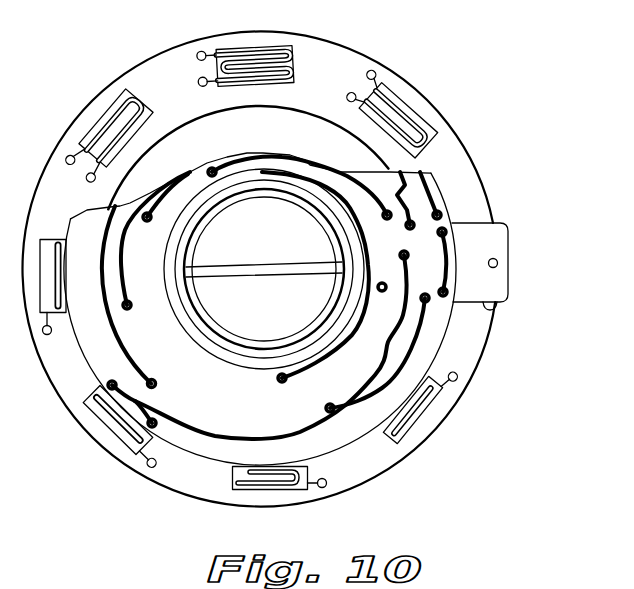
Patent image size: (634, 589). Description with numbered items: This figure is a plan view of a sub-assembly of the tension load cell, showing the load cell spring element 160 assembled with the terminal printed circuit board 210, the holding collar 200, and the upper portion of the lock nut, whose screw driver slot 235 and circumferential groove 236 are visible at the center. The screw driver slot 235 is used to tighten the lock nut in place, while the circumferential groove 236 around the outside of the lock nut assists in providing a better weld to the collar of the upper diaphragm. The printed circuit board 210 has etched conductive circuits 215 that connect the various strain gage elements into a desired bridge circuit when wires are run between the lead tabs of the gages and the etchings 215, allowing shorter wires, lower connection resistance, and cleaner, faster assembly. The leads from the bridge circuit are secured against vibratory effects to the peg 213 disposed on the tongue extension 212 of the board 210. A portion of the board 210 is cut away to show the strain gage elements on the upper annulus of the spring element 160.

The load cell spring element 160 is at (377, 60).
The holding collar 200 is at (228, 361).
The terminal printed circuit board 210 is at (353, 447).
The tongue extension 212 is at (492, 309).
The peg 213 is at (497, 259).
The conductive circuits 215 is at (130, 306).
The screw driver slot 235 is at (247, 266).
The circumferential groove 236 is at (313, 328).